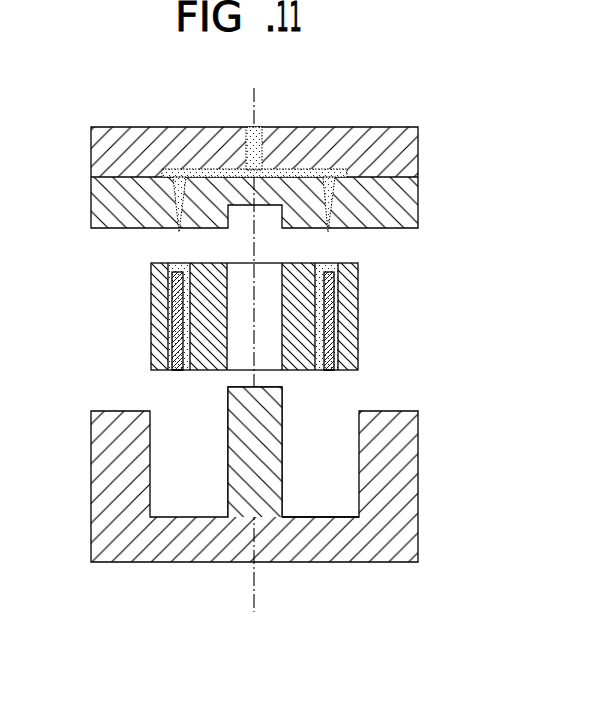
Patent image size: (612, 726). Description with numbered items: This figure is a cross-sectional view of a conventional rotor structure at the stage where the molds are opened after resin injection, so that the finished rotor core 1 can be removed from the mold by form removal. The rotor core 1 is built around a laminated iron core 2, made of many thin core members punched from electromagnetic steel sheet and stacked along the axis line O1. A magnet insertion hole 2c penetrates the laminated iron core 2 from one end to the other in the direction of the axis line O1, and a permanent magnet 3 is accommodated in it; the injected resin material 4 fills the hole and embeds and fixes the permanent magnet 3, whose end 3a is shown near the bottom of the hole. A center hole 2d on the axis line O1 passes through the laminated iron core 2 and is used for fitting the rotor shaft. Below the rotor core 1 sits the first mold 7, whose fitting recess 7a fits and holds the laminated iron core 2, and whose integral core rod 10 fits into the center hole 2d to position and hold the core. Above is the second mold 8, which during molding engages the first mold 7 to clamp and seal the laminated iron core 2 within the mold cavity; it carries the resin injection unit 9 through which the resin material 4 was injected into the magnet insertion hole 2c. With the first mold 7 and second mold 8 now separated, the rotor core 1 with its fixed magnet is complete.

The rotor core 1 is at (362, 334).
The laminated iron core 2 is at (146, 268).
The magnet insertion hole 2c is at (180, 349).
The center hole 2d is at (240, 352).
The permanent magnet 3 is at (178, 296).
The end of the magnet 3a is at (180, 372).
The resin material 4 is at (172, 323).
The first mold 7 is at (423, 484).
The fitting recess 7a is at (325, 503).
The second mold 8 is at (424, 146).
The resin injection unit 9 is at (300, 165).
The core rod 10 is at (277, 490).
The axis line O1 is at (251, 335).